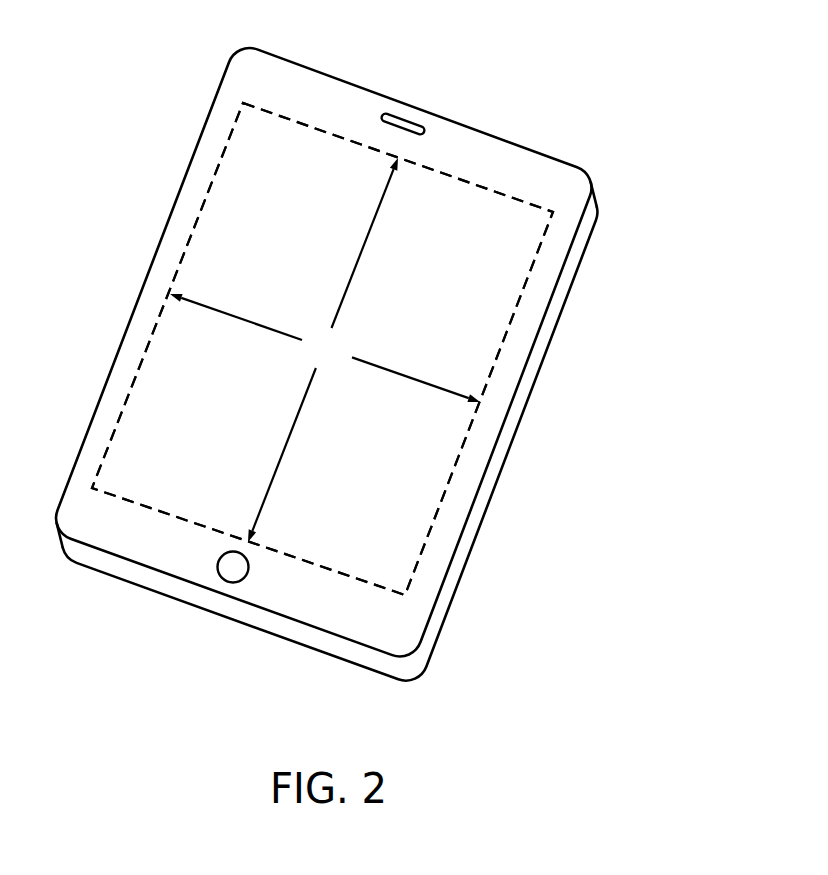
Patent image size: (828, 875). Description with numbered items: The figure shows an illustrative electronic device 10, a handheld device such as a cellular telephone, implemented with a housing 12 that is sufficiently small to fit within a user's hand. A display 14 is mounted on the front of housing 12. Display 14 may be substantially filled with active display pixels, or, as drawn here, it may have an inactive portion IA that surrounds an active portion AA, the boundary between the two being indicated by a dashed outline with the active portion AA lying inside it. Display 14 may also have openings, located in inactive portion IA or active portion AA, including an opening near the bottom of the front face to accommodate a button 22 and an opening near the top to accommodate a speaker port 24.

The electronic device 10 is at (615, 71).
The housing 12 is at (586, 230).
The display 14 is at (487, 330).
The button 22 is at (233, 583).
The speaker port 24 is at (404, 117).
The active portion AA is at (325, 350).
The inactive portion IA is at (457, 508).